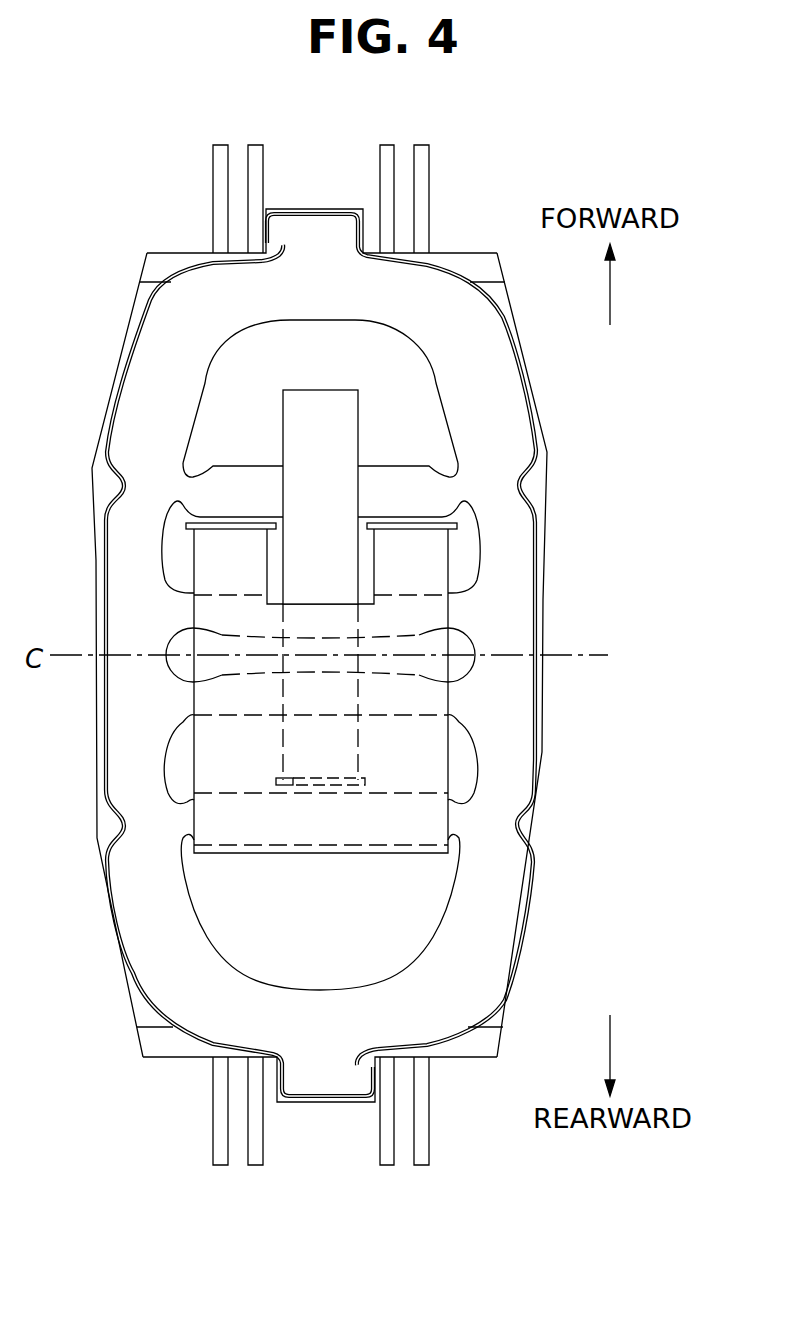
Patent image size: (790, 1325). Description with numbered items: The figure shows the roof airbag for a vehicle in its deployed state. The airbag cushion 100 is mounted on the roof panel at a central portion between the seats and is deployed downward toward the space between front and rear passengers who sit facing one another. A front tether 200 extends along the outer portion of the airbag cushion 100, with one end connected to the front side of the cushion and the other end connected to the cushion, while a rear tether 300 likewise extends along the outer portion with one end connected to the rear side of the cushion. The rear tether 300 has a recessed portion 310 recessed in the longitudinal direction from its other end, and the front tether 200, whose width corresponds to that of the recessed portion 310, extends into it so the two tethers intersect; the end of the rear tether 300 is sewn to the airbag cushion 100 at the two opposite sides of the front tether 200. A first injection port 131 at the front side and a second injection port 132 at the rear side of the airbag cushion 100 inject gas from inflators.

The airbag cushion 100 is at (566, 825).
The first injection port 131 is at (296, 226).
The second injection port 132 is at (363, 1081).
The front tether 200 is at (350, 422).
The rear tether 300 is at (448, 698).
The recessed portion 310 is at (369, 552).